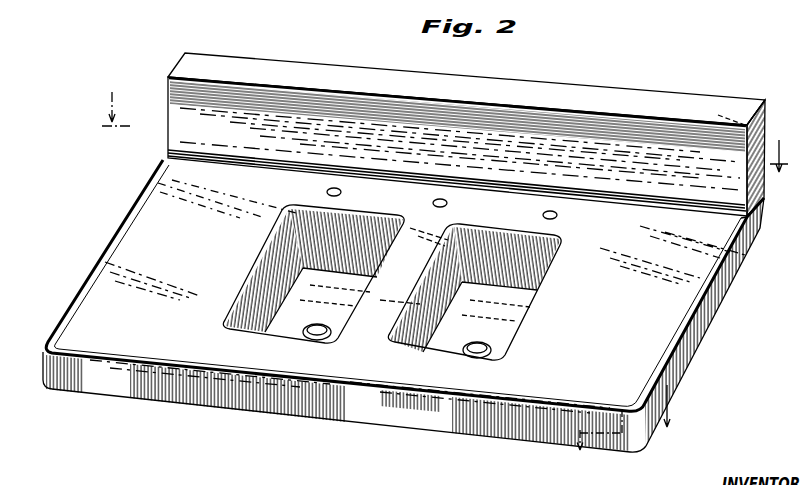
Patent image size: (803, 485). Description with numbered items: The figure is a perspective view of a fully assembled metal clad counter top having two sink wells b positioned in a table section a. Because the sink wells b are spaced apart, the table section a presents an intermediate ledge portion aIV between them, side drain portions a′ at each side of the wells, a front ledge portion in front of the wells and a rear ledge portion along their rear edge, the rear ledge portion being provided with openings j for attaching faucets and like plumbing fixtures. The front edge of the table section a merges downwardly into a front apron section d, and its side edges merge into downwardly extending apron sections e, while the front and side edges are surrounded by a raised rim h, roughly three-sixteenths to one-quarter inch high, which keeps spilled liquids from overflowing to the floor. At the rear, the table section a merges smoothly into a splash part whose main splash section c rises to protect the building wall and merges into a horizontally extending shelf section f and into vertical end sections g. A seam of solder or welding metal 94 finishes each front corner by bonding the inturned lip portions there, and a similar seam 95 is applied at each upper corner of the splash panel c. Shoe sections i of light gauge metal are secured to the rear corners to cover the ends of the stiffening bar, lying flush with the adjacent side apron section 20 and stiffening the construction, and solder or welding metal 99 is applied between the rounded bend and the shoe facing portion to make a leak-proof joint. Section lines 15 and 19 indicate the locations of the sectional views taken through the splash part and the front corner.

The shelf section f is at (556, 92).
The main splash section c is at (457, 146).
The seam of solder or welding metal 95 is at (762, 106).
The vertical end section g is at (768, 105).
The solder or welding metal 99 is at (164, 159).
The side apron section 20 is at (718, 115).
The section line 15- 15 is at (447, 143).
The table section a is at (522, 393).
The raised rim h is at (120, 216).
The side drain portion a′ is at (425, 251).
The intermediate ledge portion aIV is at (396, 296).
The sink well b is at (392, 282).
The opening j is at (336, 188).
The front apron section d is at (344, 402).
The side apron section e is at (690, 350).
The shoe section i is at (730, 282).
The seam of solder or welding metal 94 is at (638, 448).
The section line 19- 19 is at (628, 433).